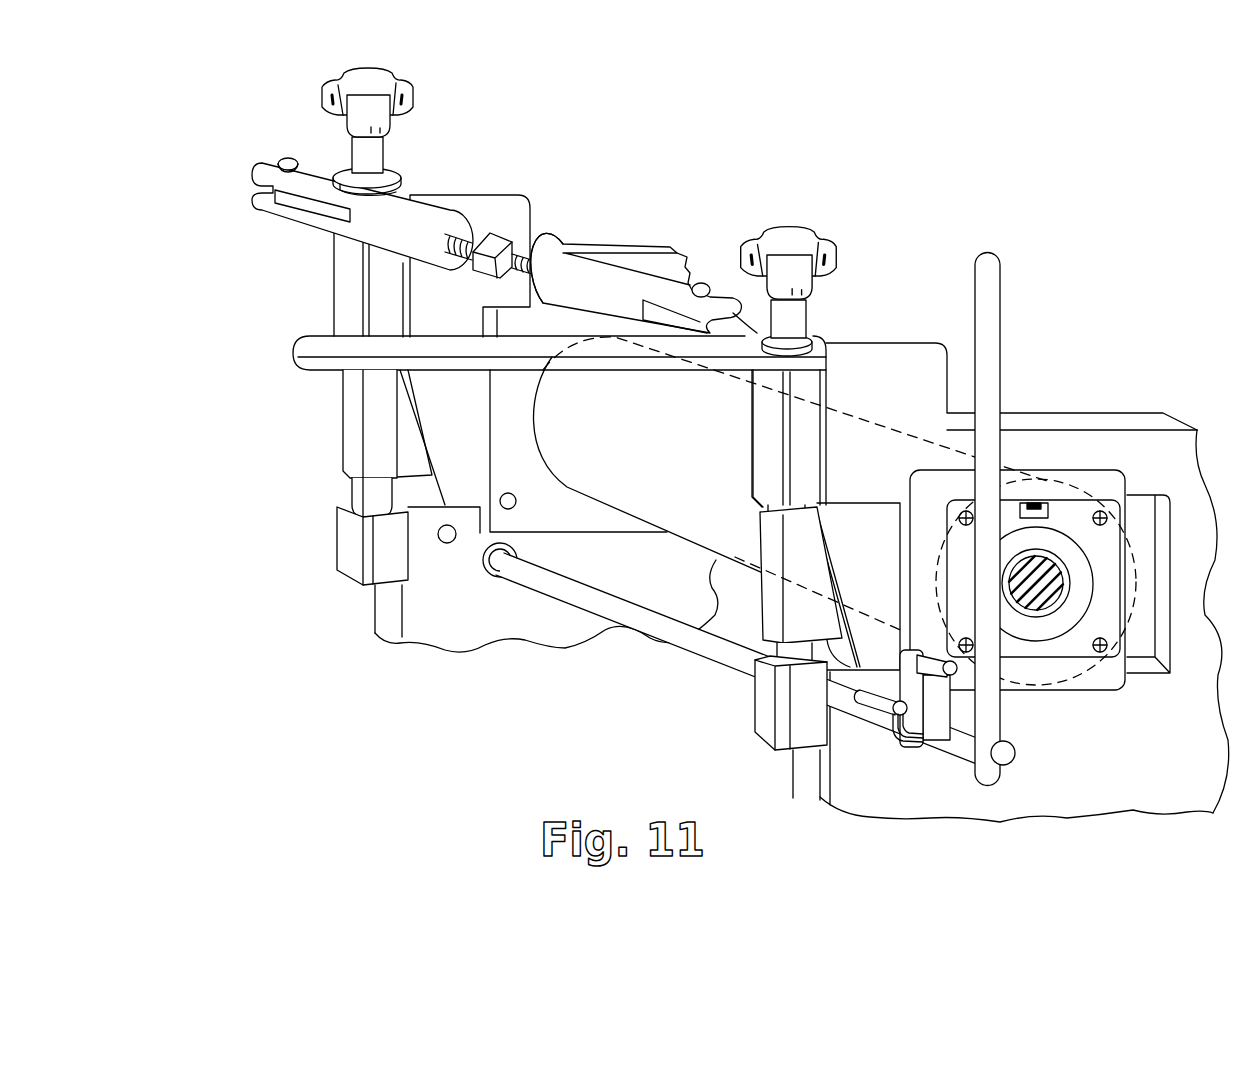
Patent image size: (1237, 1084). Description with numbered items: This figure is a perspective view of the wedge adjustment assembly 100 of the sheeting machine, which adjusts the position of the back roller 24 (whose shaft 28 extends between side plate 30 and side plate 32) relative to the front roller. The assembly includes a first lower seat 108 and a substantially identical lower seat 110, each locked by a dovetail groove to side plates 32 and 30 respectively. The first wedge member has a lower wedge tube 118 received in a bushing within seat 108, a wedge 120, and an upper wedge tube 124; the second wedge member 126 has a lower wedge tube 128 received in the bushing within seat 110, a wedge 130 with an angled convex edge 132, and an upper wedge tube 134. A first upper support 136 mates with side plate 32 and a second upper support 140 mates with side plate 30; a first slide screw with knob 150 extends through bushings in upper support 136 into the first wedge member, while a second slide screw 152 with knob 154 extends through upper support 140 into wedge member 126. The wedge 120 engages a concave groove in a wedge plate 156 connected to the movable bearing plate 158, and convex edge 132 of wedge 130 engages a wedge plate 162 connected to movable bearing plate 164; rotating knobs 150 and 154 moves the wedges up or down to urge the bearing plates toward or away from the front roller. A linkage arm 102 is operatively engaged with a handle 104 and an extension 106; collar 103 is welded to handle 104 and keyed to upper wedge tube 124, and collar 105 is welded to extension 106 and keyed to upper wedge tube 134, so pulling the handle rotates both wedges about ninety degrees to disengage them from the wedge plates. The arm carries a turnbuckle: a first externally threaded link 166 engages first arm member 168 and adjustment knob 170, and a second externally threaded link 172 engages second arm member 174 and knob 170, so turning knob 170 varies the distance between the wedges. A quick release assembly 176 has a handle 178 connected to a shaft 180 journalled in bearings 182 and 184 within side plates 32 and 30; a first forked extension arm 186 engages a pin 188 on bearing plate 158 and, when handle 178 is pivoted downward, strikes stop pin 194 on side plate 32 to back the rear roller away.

The back roller 24 is at (615, 441).
The shaft 28 is at (1047, 567).
The side plate 30 is at (490, 190).
The side plate 32 is at (1082, 426).
The wedge adjustment assembly 100 is at (588, 231).
The linkage arm 102 is at (326, 201).
The collar 103 is at (815, 338).
The handle 104 is at (305, 345).
The collar 105 is at (404, 167).
The extension 106 is at (425, 177).
The lower seat 108 is at (770, 730).
The lower seat 110 is at (350, 567).
The lower wedge tube 118 is at (787, 670).
The wedge 120 is at (757, 553).
The upper wedge tube 124 is at (810, 312).
The second wedge member 126 is at (310, 503).
The lower wedge tube 128 is at (350, 493).
The wedge 130 is at (353, 403).
The convex edge 132 is at (410, 393).
The upper wedge tube 134 is at (290, 158).
The upper support 136 is at (783, 447).
The upper support 140 is at (350, 287).
The knob 150 is at (792, 240).
The slide screw 152 is at (363, 153).
The knob 154 is at (362, 82).
The wedge plate 156 is at (870, 505).
The movable bearing plate 158 is at (1100, 687).
The wedge plate 162 is at (460, 441).
The movable bearing plate 164 is at (560, 520).
The first externally threaded link 166 is at (533, 250).
The first arm member 168 is at (610, 301).
The adjustment knob 170 is at (490, 267).
The second externally threaded link 172 is at (472, 234).
The second arm member 174 is at (402, 237).
The quick release assembly 176 is at (1048, 633).
The handle 178 is at (995, 298).
The shaft 180 is at (693, 643).
The bearing 182 is at (908, 745).
The bearing 184 is at (493, 580).
The first forked extension arm 186 is at (900, 740).
The pin 188 is at (940, 660).
The stop pin 194 is at (863, 700).